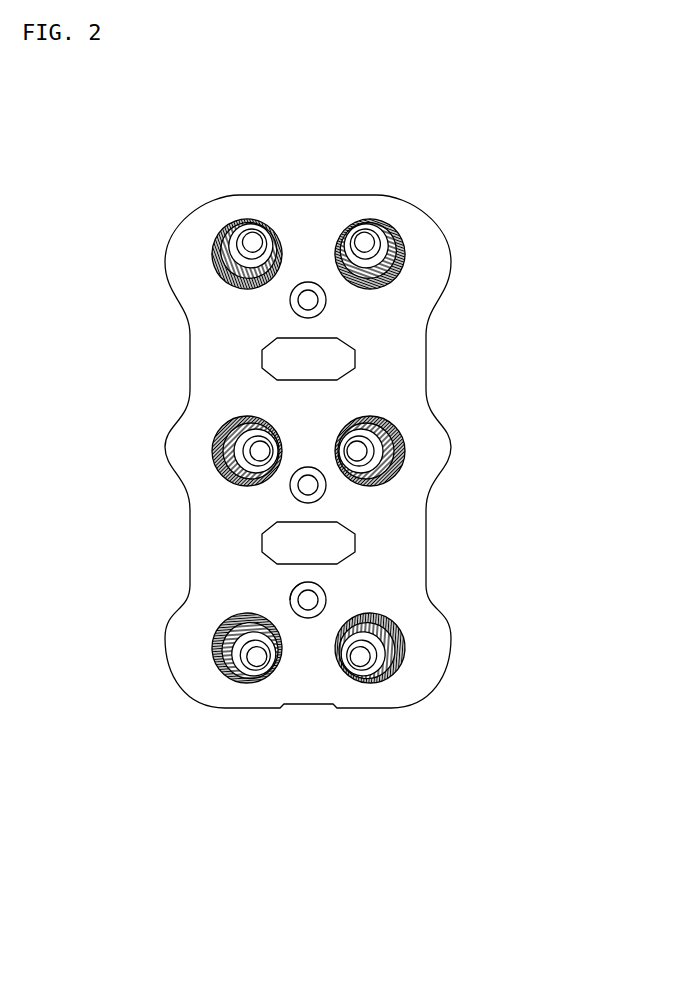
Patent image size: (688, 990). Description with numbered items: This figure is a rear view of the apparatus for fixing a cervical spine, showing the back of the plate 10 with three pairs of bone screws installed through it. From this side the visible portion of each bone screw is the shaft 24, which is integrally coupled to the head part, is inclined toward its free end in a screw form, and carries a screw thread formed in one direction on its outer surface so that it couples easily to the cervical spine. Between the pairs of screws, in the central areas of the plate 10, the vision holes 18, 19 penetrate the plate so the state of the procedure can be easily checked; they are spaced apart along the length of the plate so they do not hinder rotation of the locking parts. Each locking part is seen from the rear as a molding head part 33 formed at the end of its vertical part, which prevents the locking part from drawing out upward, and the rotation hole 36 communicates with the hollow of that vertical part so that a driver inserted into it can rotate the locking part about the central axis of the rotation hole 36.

The plate 10 is at (307, 718).
The vision hole 18 is at (306, 350).
The vision hole 19 is at (306, 535).
The shaft 24 is at (395, 665).
The molding head part 33 is at (327, 594).
The rotation hole 36 is at (290, 593).